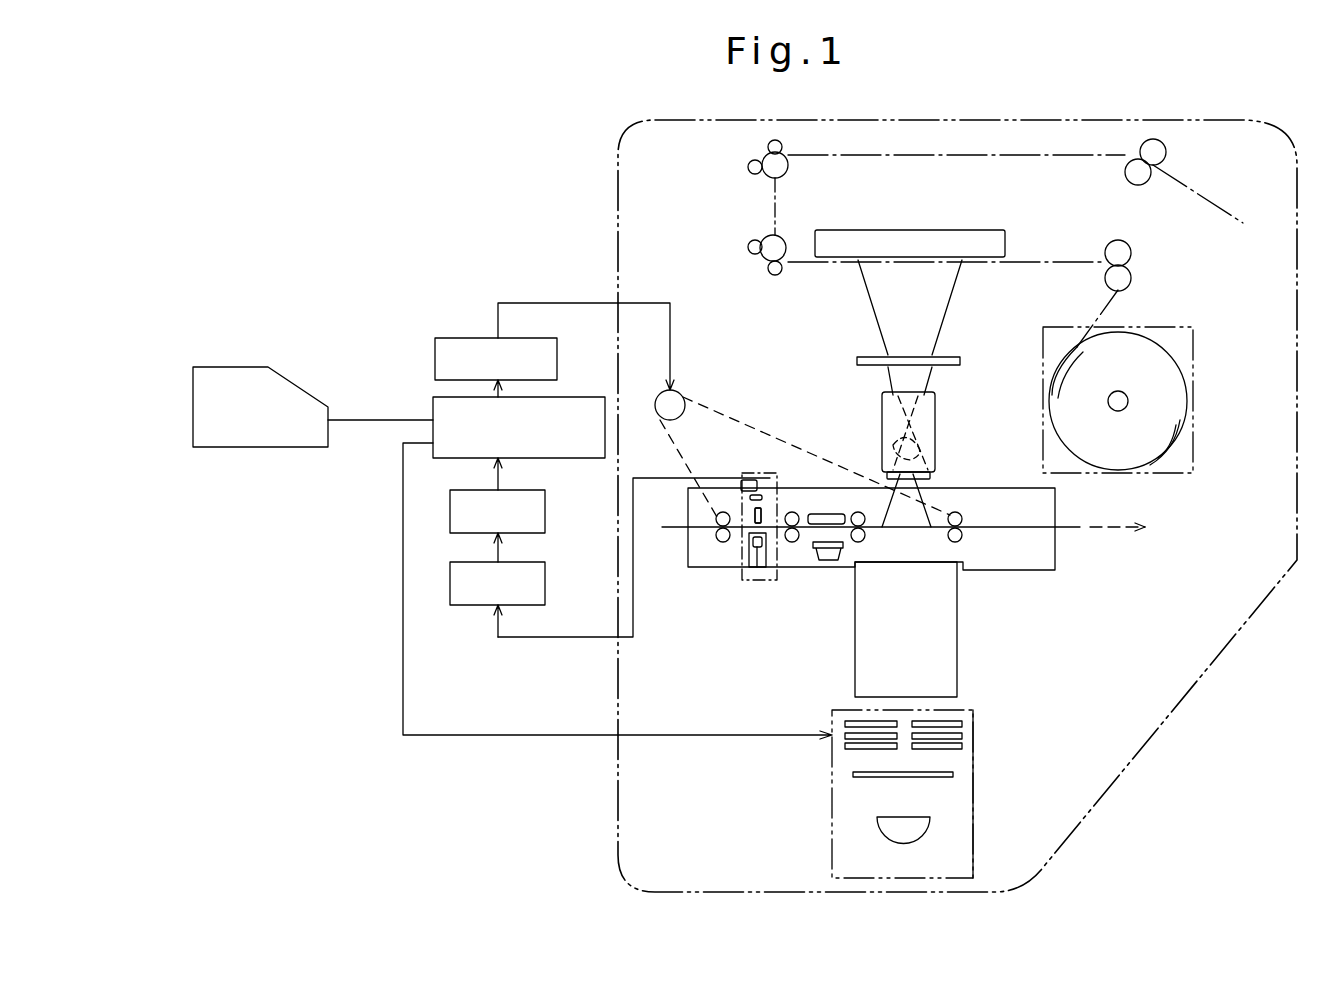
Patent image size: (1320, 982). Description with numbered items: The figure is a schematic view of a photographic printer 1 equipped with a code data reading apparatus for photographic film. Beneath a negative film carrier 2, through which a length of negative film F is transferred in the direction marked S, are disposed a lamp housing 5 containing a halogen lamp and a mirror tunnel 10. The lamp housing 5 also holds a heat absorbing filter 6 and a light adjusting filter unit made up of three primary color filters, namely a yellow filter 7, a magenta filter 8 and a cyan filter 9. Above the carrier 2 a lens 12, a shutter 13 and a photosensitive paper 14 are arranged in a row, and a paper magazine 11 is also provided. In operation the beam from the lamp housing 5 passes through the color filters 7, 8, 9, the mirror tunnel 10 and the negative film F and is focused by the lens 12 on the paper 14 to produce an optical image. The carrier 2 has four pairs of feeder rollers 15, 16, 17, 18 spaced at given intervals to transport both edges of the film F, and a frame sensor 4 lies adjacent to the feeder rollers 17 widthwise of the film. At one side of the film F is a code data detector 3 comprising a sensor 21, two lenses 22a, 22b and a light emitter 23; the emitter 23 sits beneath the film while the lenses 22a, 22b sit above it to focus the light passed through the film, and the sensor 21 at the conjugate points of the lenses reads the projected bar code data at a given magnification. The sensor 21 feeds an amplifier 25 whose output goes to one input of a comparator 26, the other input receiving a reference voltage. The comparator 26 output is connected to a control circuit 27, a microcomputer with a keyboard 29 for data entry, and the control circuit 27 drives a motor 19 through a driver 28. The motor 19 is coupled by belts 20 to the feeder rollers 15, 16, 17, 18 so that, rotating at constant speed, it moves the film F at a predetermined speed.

The housing 1 is at (1213, 667).
The negative film carrier 2 is at (1057, 571).
The code data detector 3 is at (762, 470).
The frame sensor 4 is at (837, 512).
The lamp housing 5 is at (975, 850).
The heat absorbing filter 6 is at (955, 775).
The yellow primary color filter 7 is at (963, 748).
The magenta primary color filter 8 is at (963, 736).
The cyan primary color filter 9 is at (963, 725).
The mirror tunnel 10 is at (957, 612).
The paper magazine 11 is at (1195, 348).
The lens 12 is at (928, 433).
The shutter 13 is at (863, 355).
The photosensitive paper 14 is at (1052, 265).
The feeder rollers 15 is at (720, 543).
The feeder rollers 16 is at (790, 545).
The feeder rollers 17 is at (856, 544).
The feeder rollers 18 is at (962, 515).
The motor 19 is at (665, 393).
The belts 20 is at (707, 400).
The sensor 21 is at (740, 493).
The lens 22a is at (763, 517).
The lens 22b is at (763, 517).
The light emitter 23 is at (755, 570).
The amplifier 25 is at (545, 573).
The comparator 26 is at (545, 500).
The control circuit 27 is at (433, 396).
The driver 28 is at (453, 337).
The keyboard 29 is at (238, 375).
The negative film F is at (668, 526).
The sheet feed direction S is at (1130, 529).